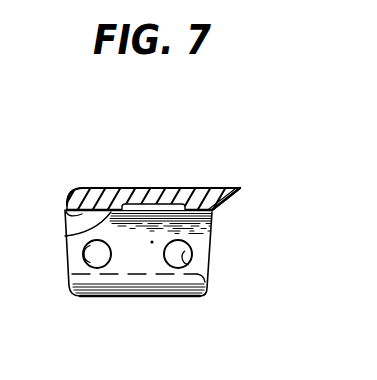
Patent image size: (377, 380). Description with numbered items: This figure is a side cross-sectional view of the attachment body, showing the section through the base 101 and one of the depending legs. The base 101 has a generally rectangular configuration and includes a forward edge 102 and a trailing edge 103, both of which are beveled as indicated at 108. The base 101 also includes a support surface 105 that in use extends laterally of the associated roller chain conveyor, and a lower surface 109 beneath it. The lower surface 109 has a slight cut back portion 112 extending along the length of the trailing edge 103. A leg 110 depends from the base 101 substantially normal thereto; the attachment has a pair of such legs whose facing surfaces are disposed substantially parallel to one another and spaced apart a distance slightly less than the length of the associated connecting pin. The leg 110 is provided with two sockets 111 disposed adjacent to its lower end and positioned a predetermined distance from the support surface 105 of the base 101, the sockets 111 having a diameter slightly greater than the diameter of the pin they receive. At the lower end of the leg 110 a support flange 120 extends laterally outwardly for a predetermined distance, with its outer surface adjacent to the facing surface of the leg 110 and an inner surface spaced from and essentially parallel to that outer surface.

The base 101 is at (219, 192).
The forward edge 102 is at (229, 193).
The trailing edge 103 is at (93, 187).
The support surface 105 is at (151, 188).
The bevel 108 is at (77, 193).
The lower surface 109 is at (65, 236).
The leg 110 is at (208, 239).
The socket 111 is at (84, 249).
The cut back portion 112 is at (62, 213).
The support flange 120 is at (190, 297).